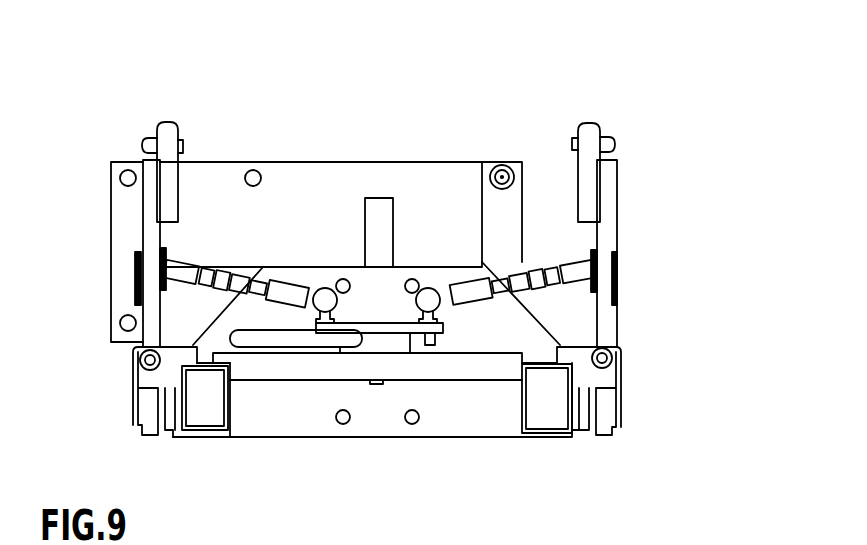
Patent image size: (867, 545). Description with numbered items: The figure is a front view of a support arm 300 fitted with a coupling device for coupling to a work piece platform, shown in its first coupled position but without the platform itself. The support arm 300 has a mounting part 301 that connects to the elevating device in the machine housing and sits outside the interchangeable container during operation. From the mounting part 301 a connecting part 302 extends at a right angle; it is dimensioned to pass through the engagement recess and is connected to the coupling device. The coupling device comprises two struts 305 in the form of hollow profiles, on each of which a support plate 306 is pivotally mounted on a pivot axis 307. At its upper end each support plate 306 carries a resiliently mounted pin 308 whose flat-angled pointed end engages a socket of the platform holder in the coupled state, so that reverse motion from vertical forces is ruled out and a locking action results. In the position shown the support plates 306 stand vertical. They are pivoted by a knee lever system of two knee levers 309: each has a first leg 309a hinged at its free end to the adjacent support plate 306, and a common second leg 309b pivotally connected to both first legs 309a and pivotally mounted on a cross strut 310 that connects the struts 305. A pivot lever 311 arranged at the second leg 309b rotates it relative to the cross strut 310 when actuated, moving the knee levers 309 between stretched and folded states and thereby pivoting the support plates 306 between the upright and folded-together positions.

The support arm 300 is at (683, 106).
The mounting part 301 is at (415, 187).
The connecting part 302 is at (370, 215).
The struts 305 is at (203, 437).
The support plate 306 is at (147, 298).
The pivot axis 307 is at (153, 363).
The pins 308 is at (166, 125).
The knee levers 309 is at (323, 291).
The first leg 309a is at (208, 275).
The second leg 309b is at (388, 343).
The cross strut 310 is at (470, 368).
The pivot lever 311 is at (289, 345).